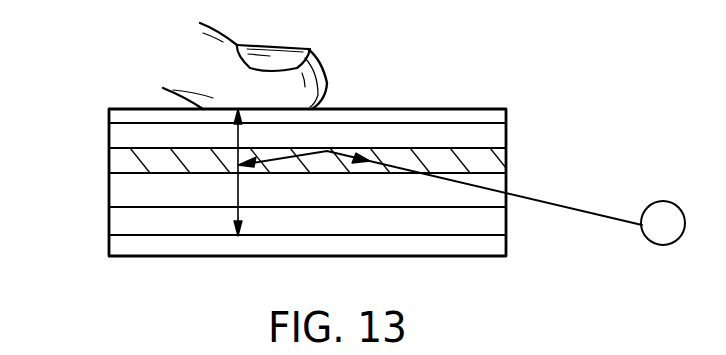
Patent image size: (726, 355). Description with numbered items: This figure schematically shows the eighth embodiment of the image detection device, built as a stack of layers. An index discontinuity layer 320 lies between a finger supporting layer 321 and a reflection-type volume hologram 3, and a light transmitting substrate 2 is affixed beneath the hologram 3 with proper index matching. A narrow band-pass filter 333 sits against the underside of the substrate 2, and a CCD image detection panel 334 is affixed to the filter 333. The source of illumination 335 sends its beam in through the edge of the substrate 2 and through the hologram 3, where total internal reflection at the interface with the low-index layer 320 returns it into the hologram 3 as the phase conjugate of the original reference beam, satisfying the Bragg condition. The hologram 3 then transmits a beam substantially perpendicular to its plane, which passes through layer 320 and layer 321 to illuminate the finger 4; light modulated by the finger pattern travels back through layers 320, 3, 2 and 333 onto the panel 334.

The finger supporting layer 321 is at (130, 114).
The index discontinuity layer 320 is at (122, 137).
The reflection-type volume hologram 3 is at (123, 163).
The light transmitting substrate 2 is at (123, 192).
The narrow band-pass filter 333 is at (122, 220).
The CCD image detection panel 334 is at (125, 257).
The source of illumination 335 is at (662, 218).
The finger 4 is at (322, 62).